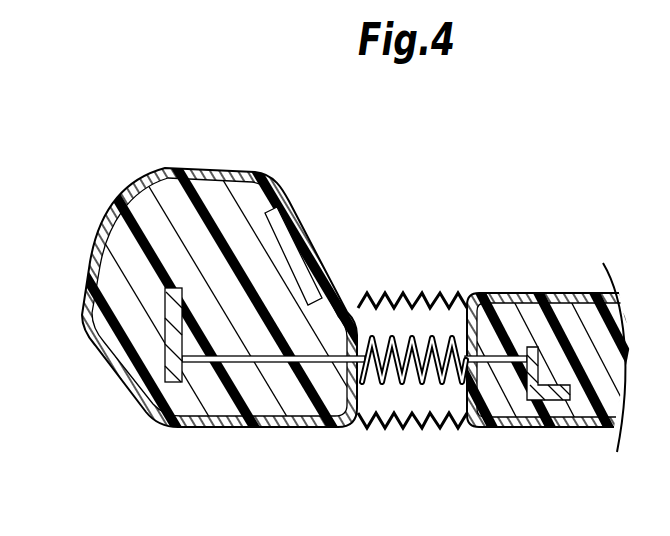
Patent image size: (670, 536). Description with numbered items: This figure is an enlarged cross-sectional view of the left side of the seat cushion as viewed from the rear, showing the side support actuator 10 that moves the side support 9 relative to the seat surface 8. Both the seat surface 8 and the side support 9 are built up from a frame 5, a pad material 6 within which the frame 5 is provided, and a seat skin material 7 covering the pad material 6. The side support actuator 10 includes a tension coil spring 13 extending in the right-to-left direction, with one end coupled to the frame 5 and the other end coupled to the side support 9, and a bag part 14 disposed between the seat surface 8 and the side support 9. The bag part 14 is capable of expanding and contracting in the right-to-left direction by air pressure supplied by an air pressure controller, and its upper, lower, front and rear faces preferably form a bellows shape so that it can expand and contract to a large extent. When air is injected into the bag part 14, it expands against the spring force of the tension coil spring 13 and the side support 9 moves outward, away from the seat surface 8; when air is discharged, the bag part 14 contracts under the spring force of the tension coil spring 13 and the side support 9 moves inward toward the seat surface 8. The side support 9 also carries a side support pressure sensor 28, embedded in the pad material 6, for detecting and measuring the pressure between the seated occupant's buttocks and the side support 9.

The frame 5 is at (168, 346).
The pad material 6 is at (223, 403).
The seat skin material 7 is at (288, 428).
The seat surface 8 is at (541, 295).
The side support 9 is at (90, 236).
The side support actuator 10 is at (412, 290).
The tension coil spring 13 is at (425, 385).
The bag part 14 is at (377, 425).
The side support pressure sensor 28 is at (292, 238).